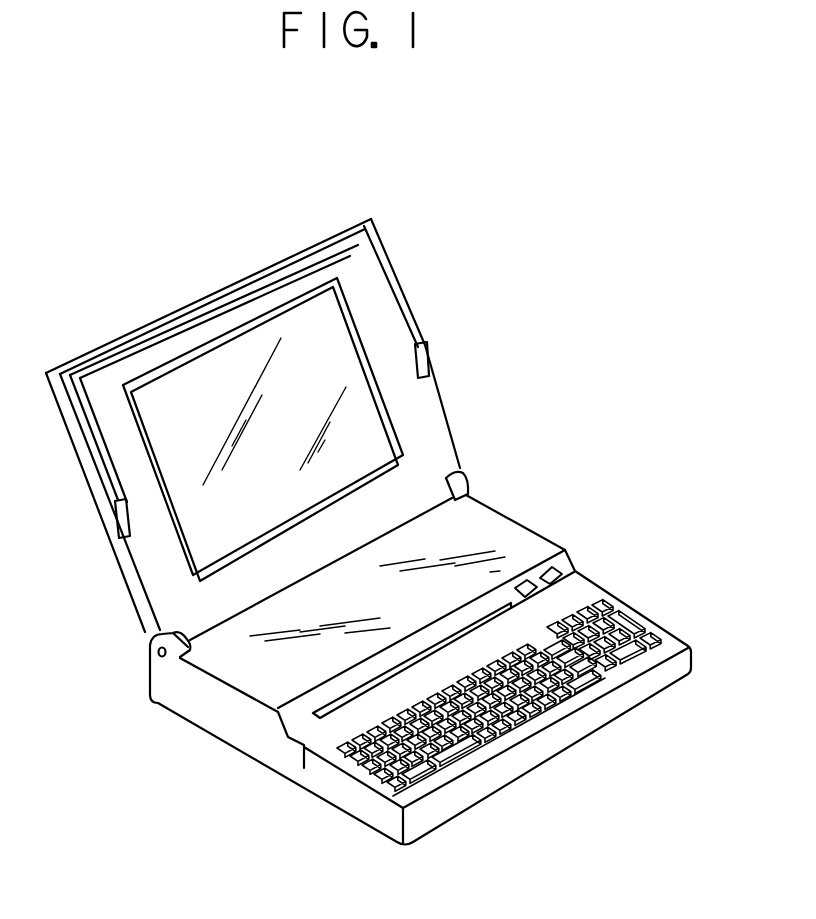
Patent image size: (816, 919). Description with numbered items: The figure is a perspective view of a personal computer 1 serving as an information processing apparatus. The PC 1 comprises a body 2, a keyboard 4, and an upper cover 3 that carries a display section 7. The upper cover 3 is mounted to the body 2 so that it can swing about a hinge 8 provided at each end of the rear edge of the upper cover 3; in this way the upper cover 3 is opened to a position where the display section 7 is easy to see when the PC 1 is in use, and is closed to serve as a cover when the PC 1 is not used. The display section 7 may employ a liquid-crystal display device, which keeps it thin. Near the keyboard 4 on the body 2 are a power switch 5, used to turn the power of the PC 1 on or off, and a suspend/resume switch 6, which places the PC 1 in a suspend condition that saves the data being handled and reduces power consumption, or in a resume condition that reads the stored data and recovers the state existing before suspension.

The personal computer 1 is at (527, 188).
The body 2 is at (218, 739).
The upper cover 3 is at (215, 287).
The keyboard 4 is at (515, 742).
The power switch 5 is at (526, 580).
The suspend/resume switch 6 is at (548, 568).
The display section 7 is at (337, 330).
The hinge 8 is at (150, 647).